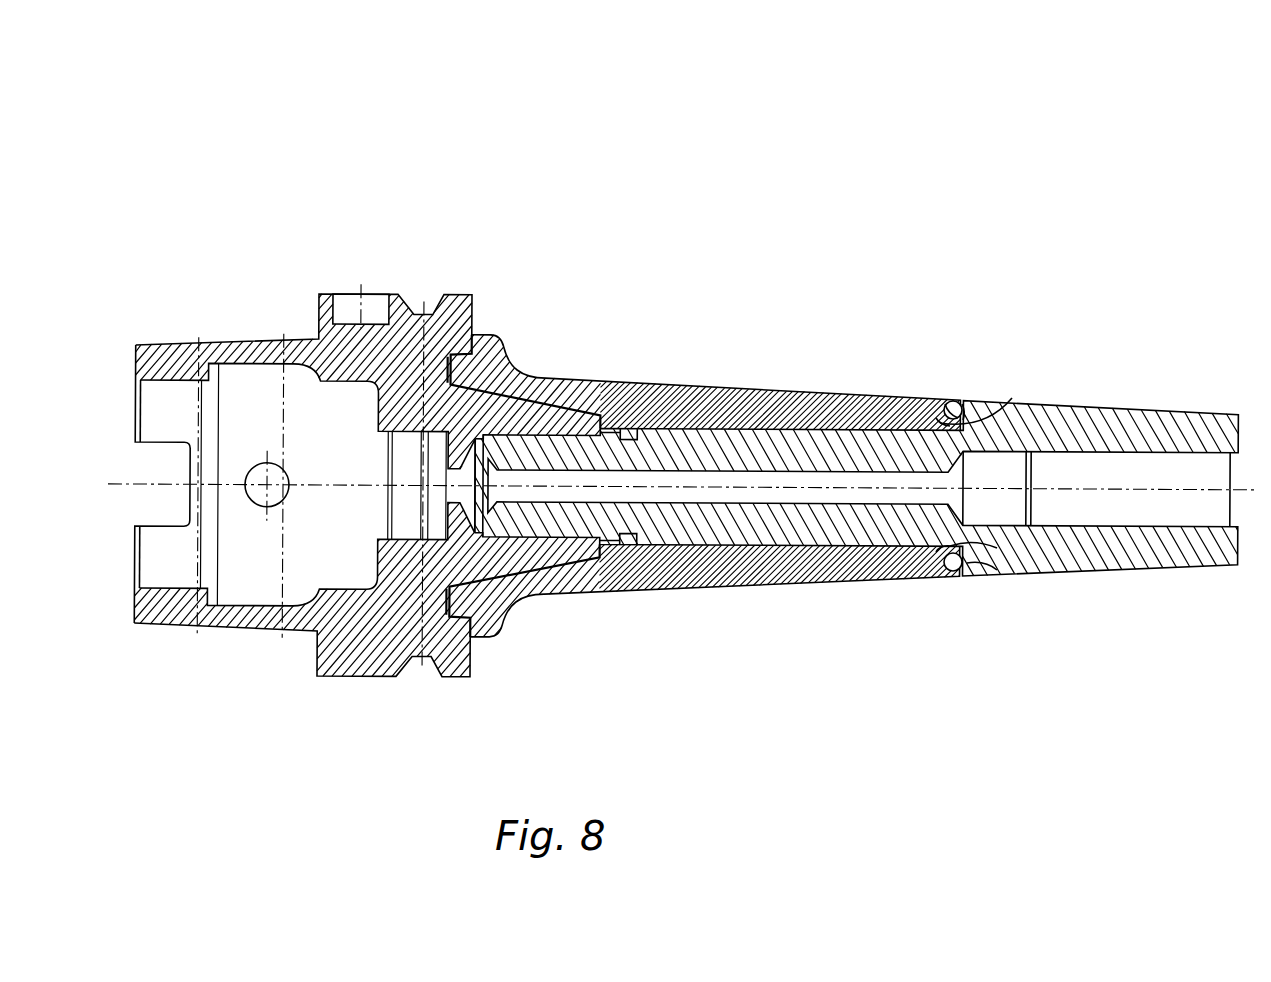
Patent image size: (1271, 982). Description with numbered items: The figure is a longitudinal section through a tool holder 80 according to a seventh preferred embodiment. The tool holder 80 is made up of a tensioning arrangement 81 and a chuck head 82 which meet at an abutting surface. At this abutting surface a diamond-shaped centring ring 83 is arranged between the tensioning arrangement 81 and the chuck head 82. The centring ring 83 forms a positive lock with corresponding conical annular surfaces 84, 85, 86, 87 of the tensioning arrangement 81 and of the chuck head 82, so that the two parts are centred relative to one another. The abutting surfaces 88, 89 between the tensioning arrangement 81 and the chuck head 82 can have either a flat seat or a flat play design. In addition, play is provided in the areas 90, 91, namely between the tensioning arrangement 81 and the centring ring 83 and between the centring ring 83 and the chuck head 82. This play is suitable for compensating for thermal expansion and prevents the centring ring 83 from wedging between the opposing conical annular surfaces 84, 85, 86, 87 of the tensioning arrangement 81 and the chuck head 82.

The tool holder 80 is at (709, 186).
The tensioning arrangement 81 is at (710, 400).
The chuck head 82 is at (1097, 427).
The centring ring 83 is at (953, 412).
The conical annular surface 84 is at (945, 403).
The conical annular surface 85 is at (940, 418).
The conical annular surface 86 is at (963, 404).
The conical annular surface 87 is at (1023, 390).
The abutting surface 88 is at (955, 575).
The abutting surface 89 is at (997, 548).
The play area 90 is at (948, 578).
The play area 91 is at (997, 570).